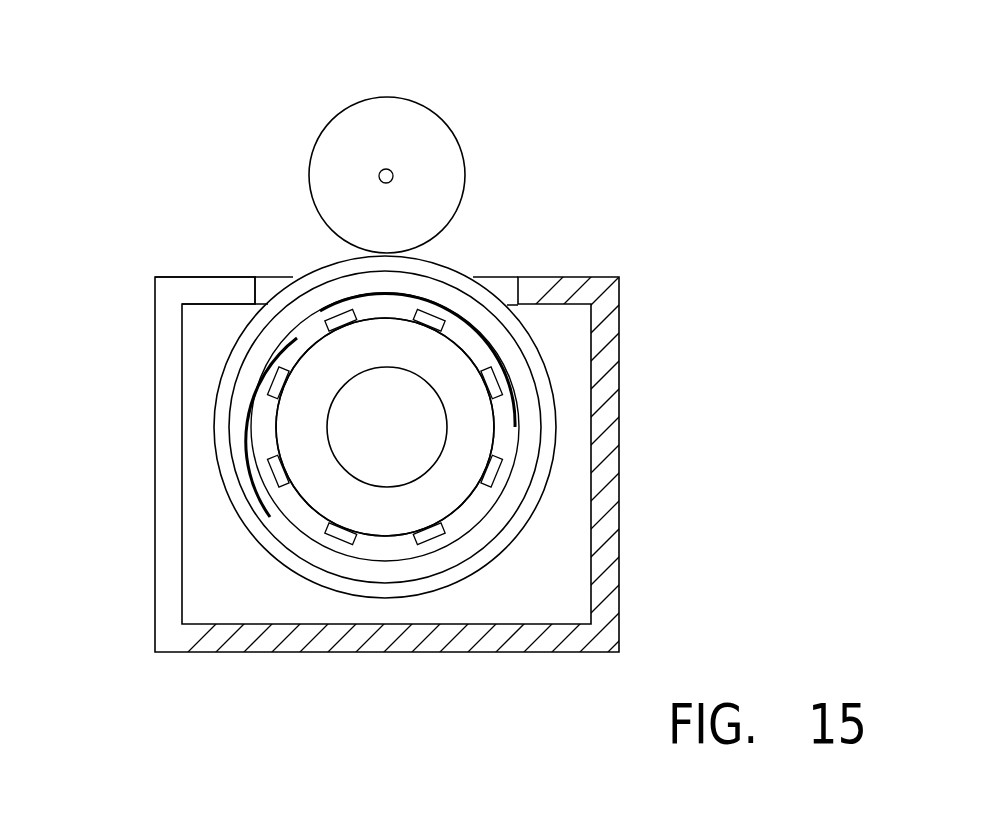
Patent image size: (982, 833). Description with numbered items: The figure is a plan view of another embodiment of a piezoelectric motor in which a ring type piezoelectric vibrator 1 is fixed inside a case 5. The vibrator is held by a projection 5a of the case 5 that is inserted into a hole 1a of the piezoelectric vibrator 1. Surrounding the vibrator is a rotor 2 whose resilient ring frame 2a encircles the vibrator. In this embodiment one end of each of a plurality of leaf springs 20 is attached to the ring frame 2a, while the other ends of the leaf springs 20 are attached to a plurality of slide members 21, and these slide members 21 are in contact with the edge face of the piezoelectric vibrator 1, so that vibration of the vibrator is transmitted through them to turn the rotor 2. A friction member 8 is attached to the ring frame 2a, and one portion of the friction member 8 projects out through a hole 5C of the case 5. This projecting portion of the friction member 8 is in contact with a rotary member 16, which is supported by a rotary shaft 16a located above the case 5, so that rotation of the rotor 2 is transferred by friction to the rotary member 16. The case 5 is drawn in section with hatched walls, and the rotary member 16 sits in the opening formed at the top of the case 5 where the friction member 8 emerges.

The ring type piezoelectric vibrator 1 is at (318, 500).
The hole 1a is at (443, 453).
The rotor 2 is at (262, 550).
The ring frame 2a is at (255, 357).
The case 5 is at (607, 595).
The projection 5a is at (427, 413).
The hole 5C is at (265, 283).
The friction member 8 is at (437, 267).
The rotary member 16 is at (345, 158).
The rotary shaft 16a is at (391, 170).
The leaf springs 20 is at (297, 338).
The slide members 21 is at (282, 472).